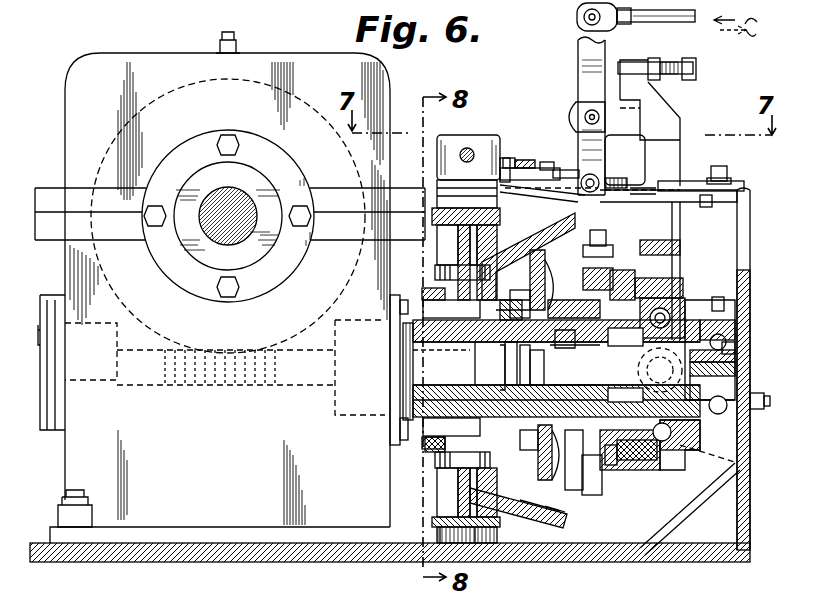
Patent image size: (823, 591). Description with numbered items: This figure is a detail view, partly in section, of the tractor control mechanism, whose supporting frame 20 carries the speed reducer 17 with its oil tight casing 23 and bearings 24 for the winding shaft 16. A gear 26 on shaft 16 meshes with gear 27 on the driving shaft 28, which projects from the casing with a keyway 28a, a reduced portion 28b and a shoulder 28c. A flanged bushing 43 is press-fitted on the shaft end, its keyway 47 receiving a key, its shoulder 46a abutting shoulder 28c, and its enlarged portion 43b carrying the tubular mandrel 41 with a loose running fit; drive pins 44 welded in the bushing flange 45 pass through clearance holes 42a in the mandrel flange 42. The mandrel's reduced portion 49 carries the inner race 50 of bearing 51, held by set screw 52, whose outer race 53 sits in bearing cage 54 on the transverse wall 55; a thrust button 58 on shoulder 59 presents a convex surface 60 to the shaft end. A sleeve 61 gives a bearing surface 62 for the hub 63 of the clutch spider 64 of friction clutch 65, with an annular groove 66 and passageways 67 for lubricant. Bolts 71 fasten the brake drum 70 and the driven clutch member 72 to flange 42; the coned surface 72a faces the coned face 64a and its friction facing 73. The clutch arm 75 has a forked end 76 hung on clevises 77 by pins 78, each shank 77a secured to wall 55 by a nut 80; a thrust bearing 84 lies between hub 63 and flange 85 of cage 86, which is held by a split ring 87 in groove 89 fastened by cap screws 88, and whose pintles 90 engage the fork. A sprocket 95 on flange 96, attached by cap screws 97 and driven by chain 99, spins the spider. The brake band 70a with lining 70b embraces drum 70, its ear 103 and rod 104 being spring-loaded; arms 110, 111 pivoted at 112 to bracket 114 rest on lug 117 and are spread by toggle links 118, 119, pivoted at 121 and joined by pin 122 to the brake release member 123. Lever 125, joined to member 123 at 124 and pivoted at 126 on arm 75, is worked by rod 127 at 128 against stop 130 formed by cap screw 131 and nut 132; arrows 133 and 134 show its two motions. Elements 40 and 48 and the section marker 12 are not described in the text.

The winding shaft 16 is at (228, 195).
The speed reducer 17 is at (215, 423).
The supporting frame 20 is at (650, 565).
The oil tight casing 23 is at (65, 480).
The bearings 24 is at (262, 182).
The gear 26 is at (190, 80).
The cooperating gear 27 is at (268, 395).
The driving shaft 28 is at (413, 359).
The keyway 28a is at (441, 365).
The reduced portion 28b is at (486, 363).
The shoulder 28c is at (505, 318).
The link 40 is at (538, 450).
The tubular mandrel 41 is at (680, 345).
The flange 42 is at (456, 258).
The clearance holes 42a is at (468, 330).
The flanged bushing 43 is at (392, 345).
The enlarged diameter portion 43b is at (403, 384).
The drive pins 44 is at (425, 295).
The flange 45 is at (428, 450).
The shoulder 46a is at (530, 452).
The keyway 47 is at (500, 352).
The thrust washer 48 is at (507, 360).
The reduced diameter portion 49 is at (737, 372).
The inner race 50 is at (737, 355).
The anti-friction radial and thrust bearing 51 is at (740, 337).
The set screw 52 is at (682, 370).
The outer race 53 is at (737, 330).
The bearing cage 54 is at (712, 304).
The vertical transverse wall 55 is at (750, 208).
The thrust button 58 is at (542, 372).
The shoulder 59 is at (575, 365).
The convex thrust surface 60 is at (530, 360).
The sleeve 61 is at (572, 347).
The bearing surface 62 is at (622, 346).
The hub 63 is at (525, 292).
The clutch spider 64 is at (535, 268).
The outer face 64a is at (570, 514).
The friction clutch 65 is at (528, 233).
The annular groove 66 is at (612, 388).
The passageways 67 is at (575, 300).
The brake drum 70 is at (432, 517).
The brake band 70a is at (440, 548).
The brake lining 70b is at (478, 548).
The bolts 71 is at (435, 268).
The driven clutch member 72 is at (500, 508).
The coned inner surface 72a is at (527, 516).
The friction facing 73 is at (548, 516).
The clutch operating arm 75 is at (681, 114).
The forked lower end 76 is at (680, 236).
The clevises 77 is at (680, 440).
The threaded shank 77a is at (770, 402).
The pins 78 is at (750, 470).
The nut 80 is at (758, 393).
The thrust bearing 84 is at (660, 328).
The flange 85 is at (680, 305).
The bearing cage 86 is at (680, 460).
The split ring 87 is at (640, 466).
The cap screws 88 is at (660, 278).
The groove 89 is at (622, 462).
The pintles 90 is at (725, 376).
The sprocket 95 is at (598, 232).
The integral flange 96 is at (590, 268).
The cap screws 97 is at (618, 262).
The chain 99 is at (580, 498).
The projecting ear 103 is at (466, 138).
The rod 104 is at (470, 150).
The arm 110 is at (688, 181).
The arm 111 is at (640, 187).
The pivotal connection 112 is at (729, 179).
The bracket 114 is at (704, 207).
The lug 117 is at (437, 184).
The link 118 is at (520, 155).
The link 119 is at (558, 168).
The pivot 121 is at (546, 162).
The pin 122 is at (510, 150).
The brake release member 123 is at (575, 200).
The pivotal joint 124 is at (596, 180).
The operating lever 125 is at (580, 42).
The pivot 126 is at (585, 114).
The rod 127 is at (650, 22).
The pivot 128 is at (580, 24).
The adjustable stop means 130 is at (697, 64).
The cap screw 131 is at (676, 62).
The nut 132 is at (654, 58).
The solid arrow 133 is at (750, 23).
The dotted arrow 134 is at (751, 37).
The section line 12 is at (625, 277).